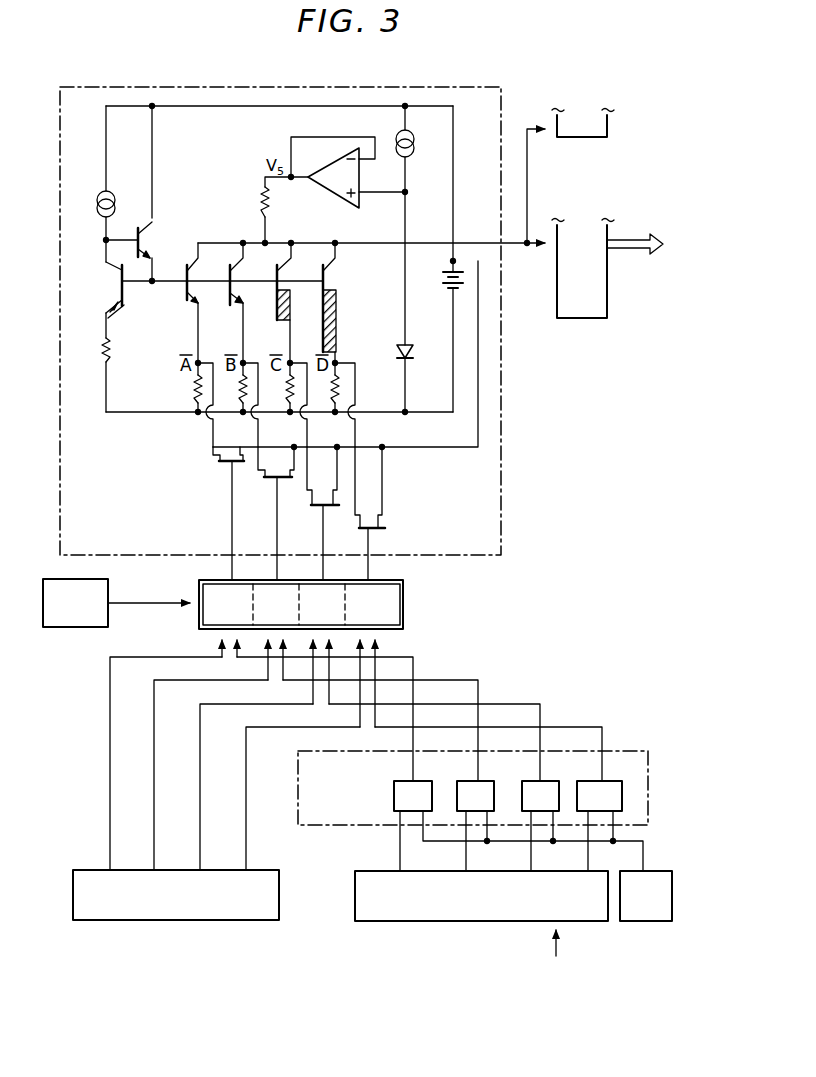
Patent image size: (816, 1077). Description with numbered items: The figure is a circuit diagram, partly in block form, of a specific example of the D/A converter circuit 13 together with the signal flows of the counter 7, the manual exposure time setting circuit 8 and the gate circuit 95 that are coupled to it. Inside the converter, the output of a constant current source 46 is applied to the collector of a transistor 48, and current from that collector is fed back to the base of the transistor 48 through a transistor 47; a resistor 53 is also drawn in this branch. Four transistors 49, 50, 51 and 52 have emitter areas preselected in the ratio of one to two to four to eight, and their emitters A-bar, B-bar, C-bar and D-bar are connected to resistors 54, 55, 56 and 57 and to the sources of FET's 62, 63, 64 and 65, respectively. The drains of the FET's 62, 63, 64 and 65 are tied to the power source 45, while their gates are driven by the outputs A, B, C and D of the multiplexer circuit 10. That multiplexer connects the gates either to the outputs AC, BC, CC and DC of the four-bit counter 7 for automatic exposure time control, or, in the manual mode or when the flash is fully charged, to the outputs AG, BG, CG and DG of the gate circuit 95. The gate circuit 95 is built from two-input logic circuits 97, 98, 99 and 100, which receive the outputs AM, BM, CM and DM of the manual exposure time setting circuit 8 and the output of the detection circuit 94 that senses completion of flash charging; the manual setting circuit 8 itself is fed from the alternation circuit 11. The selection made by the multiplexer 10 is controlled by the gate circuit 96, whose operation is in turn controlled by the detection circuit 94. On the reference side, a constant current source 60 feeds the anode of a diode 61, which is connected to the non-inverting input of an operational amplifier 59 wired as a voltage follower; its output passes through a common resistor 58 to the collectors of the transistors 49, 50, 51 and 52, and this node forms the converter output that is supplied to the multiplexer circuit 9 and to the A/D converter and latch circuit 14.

The D/A converter circuit 13 is at (134, 86).
The constant current source 46 is at (96, 206).
The transistor 47 is at (147, 250).
The transistor 48 is at (98, 284).
The transistor 49 is at (185, 279).
The transistor 50 is at (229, 279).
The transistor 51 is at (276, 279).
The transistor 52 is at (322, 279).
The resistor 53 is at (100, 350).
The resistor 54 is at (196, 405).
The resistor 55 is at (240, 405).
The resistor 56 is at (287, 405).
The resistor 57 is at (332, 405).
The common resistor 58 is at (261, 206).
The operational amplifier 59 is at (334, 192).
The constant current source 60 is at (414, 154).
The diode 61 is at (412, 350).
The power source 45 is at (446, 286).
The multiplexer circuit 9 is at (578, 139).
The A/D converter and latch circuit 14 is at (588, 320).
The FET 62 is at (218, 457).
The FET 63 is at (262, 471).
The FET 64 is at (311, 509).
The FET 65 is at (366, 534).
The multiplexer circuit 10 is at (403, 601).
The gate circuit 96 is at (55, 628).
The gate circuit 95 is at (647, 751).
The two-input logic circuit 97 is at (518, 826).
The two-input logic circuit 98 is at (475, 826).
The two-input logic circuit 99 is at (540, 826).
The two-input logic circuit 100 is at (599, 826).
The counter 7 is at (93, 869).
The manual exposure time setting circuit 8 is at (430, 921).
The detection circuit 94 is at (633, 922).
The alternation circuit 11 is at (555, 980).